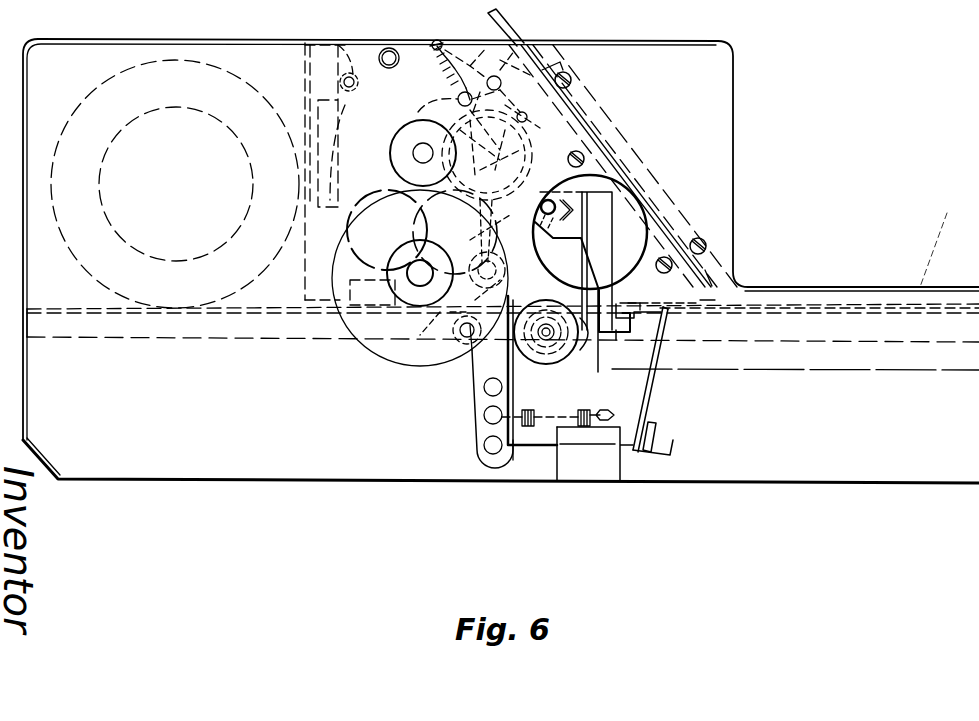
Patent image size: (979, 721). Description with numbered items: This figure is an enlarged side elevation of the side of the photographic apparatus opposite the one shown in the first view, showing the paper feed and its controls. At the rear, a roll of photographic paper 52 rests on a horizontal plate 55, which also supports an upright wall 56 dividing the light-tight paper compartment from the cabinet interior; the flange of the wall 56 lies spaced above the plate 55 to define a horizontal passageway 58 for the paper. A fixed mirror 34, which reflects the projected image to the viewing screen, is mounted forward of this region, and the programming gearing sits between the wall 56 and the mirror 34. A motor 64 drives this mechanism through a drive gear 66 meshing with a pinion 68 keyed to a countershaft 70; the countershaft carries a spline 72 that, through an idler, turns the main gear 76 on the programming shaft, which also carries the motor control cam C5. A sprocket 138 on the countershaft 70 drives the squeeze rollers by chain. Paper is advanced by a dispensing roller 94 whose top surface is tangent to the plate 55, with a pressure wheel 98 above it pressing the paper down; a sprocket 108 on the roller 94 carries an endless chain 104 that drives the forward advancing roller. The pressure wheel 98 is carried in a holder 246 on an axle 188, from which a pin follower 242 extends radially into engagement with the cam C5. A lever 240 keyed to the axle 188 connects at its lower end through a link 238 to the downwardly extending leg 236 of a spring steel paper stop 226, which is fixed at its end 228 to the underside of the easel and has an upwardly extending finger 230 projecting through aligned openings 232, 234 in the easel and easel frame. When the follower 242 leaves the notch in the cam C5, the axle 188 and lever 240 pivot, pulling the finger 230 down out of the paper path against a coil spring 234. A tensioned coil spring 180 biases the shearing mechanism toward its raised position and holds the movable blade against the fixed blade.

The mirror 34 is at (612, 118).
The roll of photographic paper 52 is at (98, 82).
The horizontal plate 55 is at (234, 313).
The wall 56 is at (303, 66).
The horizontal passageway 58 is at (303, 302).
The motor 64 is at (475, 68).
The drive gear 66 is at (405, 128).
The pinion 68 is at (384, 190).
The countershaft 70 is at (420, 273).
The spline 72 is at (420, 273).
The main gear 76 is at (445, 100).
The paper dispensing roller 94 is at (520, 366).
The pressure wheel 98 is at (500, 266).
The endless chain 104 is at (855, 371).
The sprocket 108 is at (546, 366).
The sprocket 138 is at (390, 292).
The tensioned coil spring 180 is at (445, 74).
The axle 188 is at (445, 318).
The spring steel paper stop 226 is at (656, 387).
The end 228 is at (617, 342).
The upwardly extending finger 230 is at (664, 318).
The opening 232 is at (668, 312).
The opening 234 is at (665, 298).
The downwardly extending leg 236 is at (648, 394).
The link 238 is at (516, 446).
The lever 240 is at (472, 440).
The pin follower 242 is at (458, 212).
The holder 246 is at (566, 258).
The motor control cam C5 is at (491, 152).